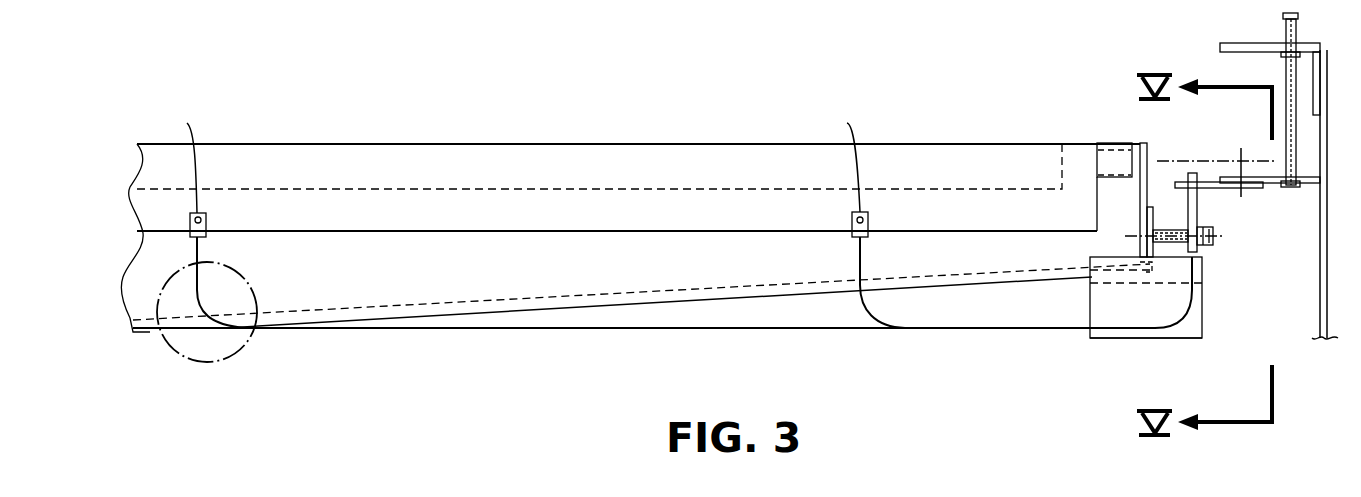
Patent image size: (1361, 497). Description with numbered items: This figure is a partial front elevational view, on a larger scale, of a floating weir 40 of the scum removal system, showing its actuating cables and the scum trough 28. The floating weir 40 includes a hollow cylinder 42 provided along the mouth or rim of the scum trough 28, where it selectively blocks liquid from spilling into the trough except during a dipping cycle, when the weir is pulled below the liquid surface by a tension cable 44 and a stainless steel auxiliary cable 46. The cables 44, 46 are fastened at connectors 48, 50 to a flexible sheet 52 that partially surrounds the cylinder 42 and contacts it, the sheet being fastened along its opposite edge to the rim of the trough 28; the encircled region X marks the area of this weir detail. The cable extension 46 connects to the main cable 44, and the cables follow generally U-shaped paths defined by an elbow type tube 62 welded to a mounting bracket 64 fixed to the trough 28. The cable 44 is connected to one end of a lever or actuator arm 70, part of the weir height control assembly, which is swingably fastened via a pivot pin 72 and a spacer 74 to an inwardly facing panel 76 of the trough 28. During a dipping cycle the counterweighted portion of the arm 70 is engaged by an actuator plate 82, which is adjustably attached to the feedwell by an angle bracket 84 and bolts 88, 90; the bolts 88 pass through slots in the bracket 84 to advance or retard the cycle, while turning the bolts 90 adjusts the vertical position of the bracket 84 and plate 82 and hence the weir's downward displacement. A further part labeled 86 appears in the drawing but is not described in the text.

The scum trough 28 is at (413, 300).
The floating weir 40 is at (482, 125).
The hollow cylinder 42 is at (1114, 158).
The tension cable 44 is at (705, 328).
The auxiliary cable 46 is at (880, 307).
The connector 48 is at (201, 220).
The connector 50 is at (843, 174).
The flexible sheet 52 is at (618, 147).
The elbow type tube 62 is at (1194, 302).
The mounting bracket 64 is at (1192, 328).
The lever or actuator arm 70 is at (1199, 216).
The pivot pin 72 is at (1213, 239).
The spacer 74 is at (1170, 246).
The inwardly facing panel 76 is at (1148, 177).
The actuator plate 82 is at (1216, 177).
The angle bracket 84 is at (1273, 185).
The bracket 86 is at (1240, 43).
The bolt 88 is at (1247, 165).
The bolt 90 is at (1286, 33).
The detail circle X is at (232, 362).